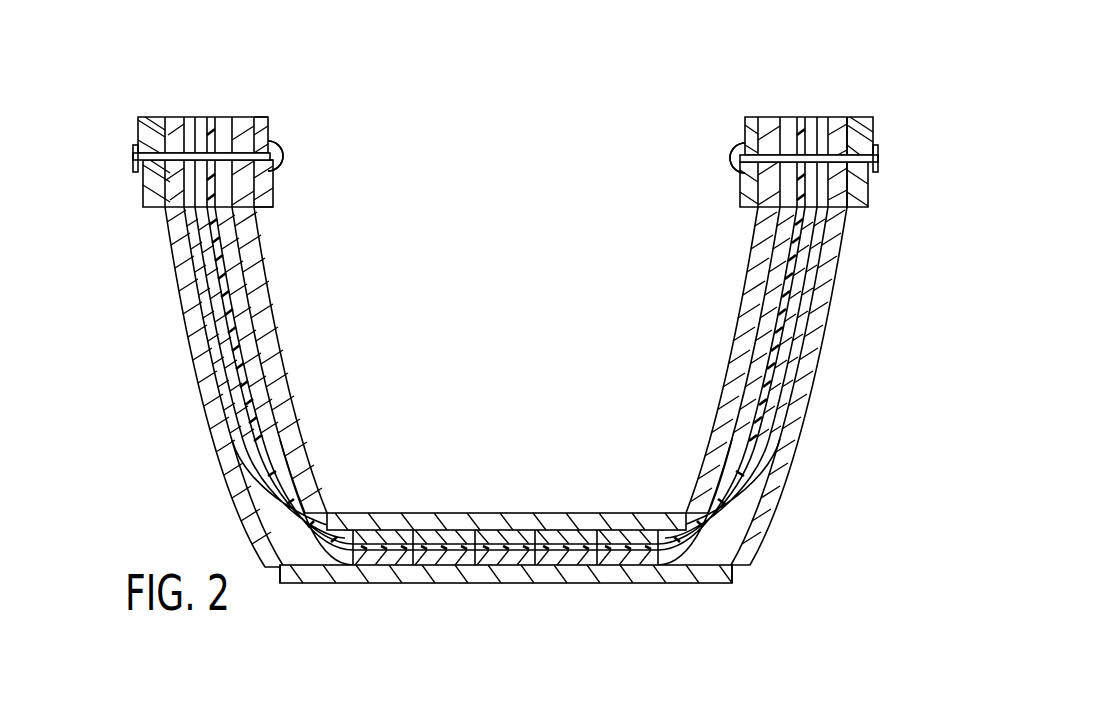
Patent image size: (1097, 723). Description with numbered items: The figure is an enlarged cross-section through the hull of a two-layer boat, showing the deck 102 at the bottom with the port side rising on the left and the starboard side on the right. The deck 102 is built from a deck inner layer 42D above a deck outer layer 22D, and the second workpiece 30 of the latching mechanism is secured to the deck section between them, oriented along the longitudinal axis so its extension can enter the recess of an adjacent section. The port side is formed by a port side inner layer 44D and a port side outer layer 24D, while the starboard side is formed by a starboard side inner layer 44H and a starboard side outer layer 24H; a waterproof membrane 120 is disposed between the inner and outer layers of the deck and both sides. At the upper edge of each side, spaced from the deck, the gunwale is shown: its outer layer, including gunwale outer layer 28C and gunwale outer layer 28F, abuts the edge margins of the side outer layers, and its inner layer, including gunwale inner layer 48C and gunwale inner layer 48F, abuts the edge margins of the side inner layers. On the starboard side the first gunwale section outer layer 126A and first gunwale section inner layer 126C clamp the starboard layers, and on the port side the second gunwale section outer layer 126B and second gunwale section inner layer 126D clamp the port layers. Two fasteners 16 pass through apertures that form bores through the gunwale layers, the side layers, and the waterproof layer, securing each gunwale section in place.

The fastener 16 is at (284, 155).
The deck outer layer 22D is at (455, 583).
The port side outer layer 24D is at (184, 338).
The starboard side outer layer 24H is at (825, 335).
The gunwale outer layer 28C is at (152, 118).
The gunwale outer layer 28F is at (860, 118).
The second workpiece 30 is at (264, 420).
The deck inner layer 42D is at (417, 513).
The port side inner layer 44D is at (268, 277).
The starboard side inner layer 44H is at (752, 275).
The gunwale inner layer 48C is at (250, 120).
The gunwale inner layer 48F is at (755, 118).
The deck 102 is at (627, 470).
The waterproof membrane 120 is at (204, 117).
The first gunwale section outer layer 126A is at (887, 163).
The second gunwale section outer layer 126B is at (128, 143).
The first gunwale section inner layer 126C is at (715, 137).
The second gunwale section inner layer 126D is at (290, 138).